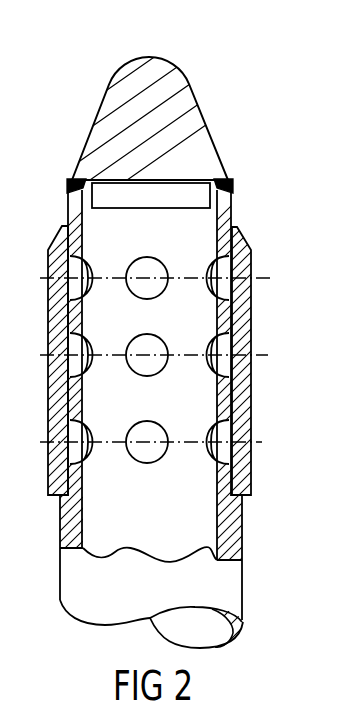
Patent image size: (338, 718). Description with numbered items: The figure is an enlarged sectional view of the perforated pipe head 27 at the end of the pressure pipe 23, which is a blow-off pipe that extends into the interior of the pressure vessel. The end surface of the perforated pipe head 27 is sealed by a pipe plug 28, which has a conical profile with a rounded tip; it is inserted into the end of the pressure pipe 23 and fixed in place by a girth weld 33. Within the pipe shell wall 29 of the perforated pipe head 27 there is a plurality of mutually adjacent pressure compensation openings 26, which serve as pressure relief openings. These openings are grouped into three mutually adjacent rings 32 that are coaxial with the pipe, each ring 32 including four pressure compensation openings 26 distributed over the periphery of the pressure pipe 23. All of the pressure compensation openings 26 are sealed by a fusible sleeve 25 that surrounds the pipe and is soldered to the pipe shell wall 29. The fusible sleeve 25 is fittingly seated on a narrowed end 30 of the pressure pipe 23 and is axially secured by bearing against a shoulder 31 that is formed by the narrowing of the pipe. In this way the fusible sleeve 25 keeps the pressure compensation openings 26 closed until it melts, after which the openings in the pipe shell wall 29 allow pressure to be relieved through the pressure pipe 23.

The pressure pipe 23 is at (240, 628).
The fusible sleeve 25 is at (262, 255).
The pressure compensation openings 26 is at (207, 268).
The perforated pipe head 27 is at (165, 226).
The pipe plug 28 is at (139, 55).
The pipe shell wall 29 is at (238, 538).
The narrowed end 30 is at (207, 220).
The shoulder 31 is at (62, 500).
The rings 32 is at (119, 277).
The girth weld 33 is at (228, 182).